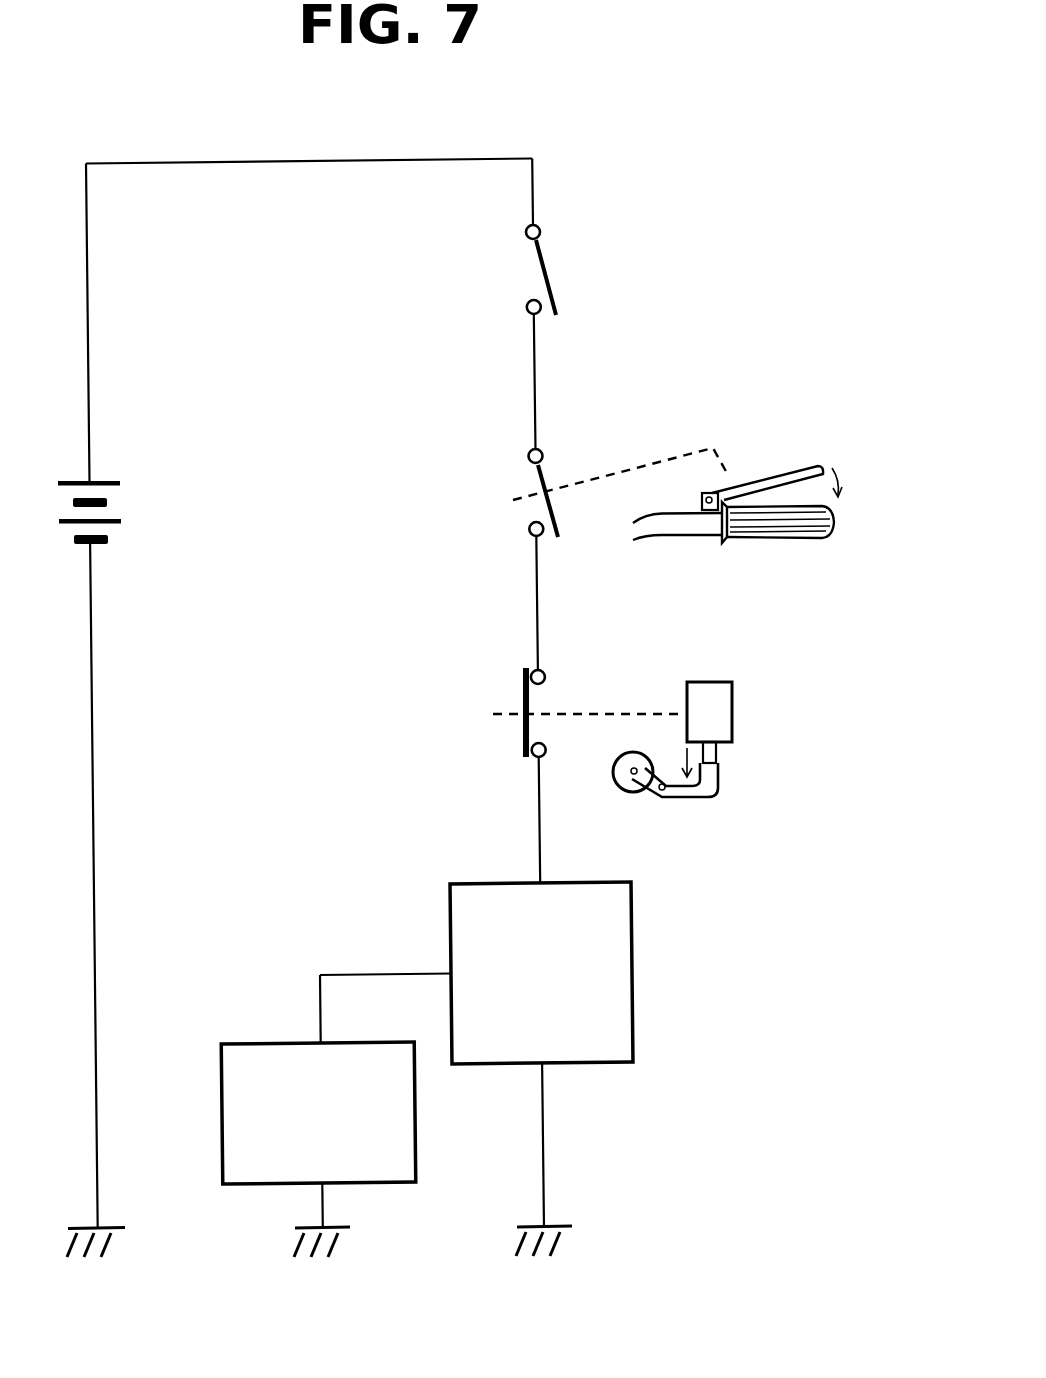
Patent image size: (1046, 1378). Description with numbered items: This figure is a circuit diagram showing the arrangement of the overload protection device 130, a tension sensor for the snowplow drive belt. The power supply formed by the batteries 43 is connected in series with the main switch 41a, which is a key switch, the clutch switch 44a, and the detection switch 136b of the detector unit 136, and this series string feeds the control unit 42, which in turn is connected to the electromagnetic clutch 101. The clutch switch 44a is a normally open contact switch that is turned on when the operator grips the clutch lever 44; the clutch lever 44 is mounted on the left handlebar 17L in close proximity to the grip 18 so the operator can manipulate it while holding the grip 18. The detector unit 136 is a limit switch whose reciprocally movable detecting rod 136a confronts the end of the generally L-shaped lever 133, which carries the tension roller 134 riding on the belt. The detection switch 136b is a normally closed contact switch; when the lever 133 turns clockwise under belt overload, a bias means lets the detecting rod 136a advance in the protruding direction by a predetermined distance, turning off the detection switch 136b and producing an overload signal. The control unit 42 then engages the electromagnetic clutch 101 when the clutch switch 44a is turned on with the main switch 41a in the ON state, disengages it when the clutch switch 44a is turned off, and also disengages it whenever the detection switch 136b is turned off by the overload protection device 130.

The main switch 41a is at (545, 262).
The batteries 43 is at (110, 521).
The clutch switch 44a is at (535, 478).
The clutch lever 44 is at (772, 470).
The grip 18 is at (797, 537).
The left operation handlebar 17L is at (688, 527).
The detection switch 136b is at (524, 690).
The overload protection device 130 is at (501, 711).
The detector unit 136 is at (733, 702).
The detecting rod 136a is at (722, 748).
The tension roller 134 is at (616, 788).
The lever 133 is at (703, 793).
The control unit 42 is at (634, 970).
The electromagnetic clutch 101 is at (288, 1042).